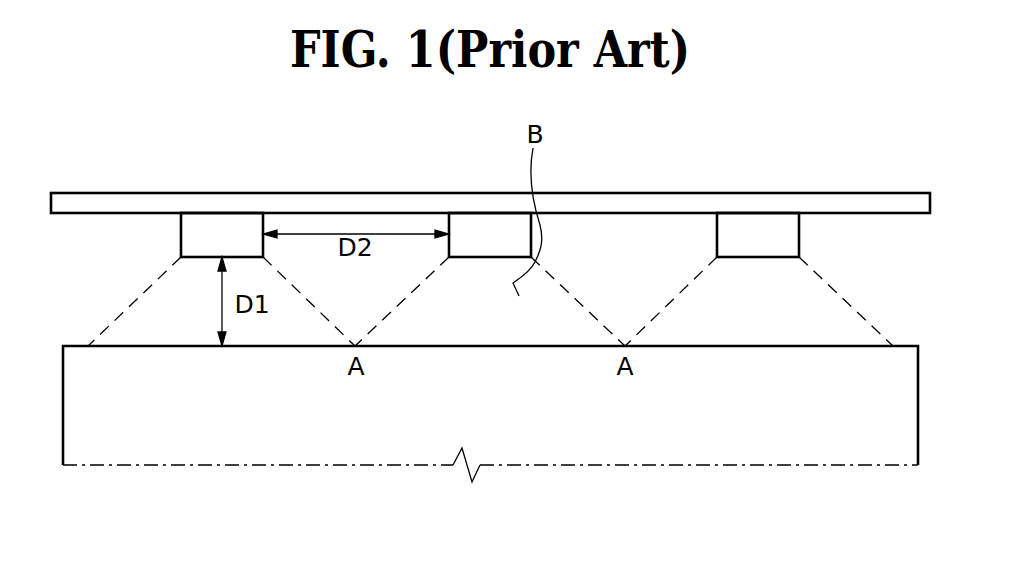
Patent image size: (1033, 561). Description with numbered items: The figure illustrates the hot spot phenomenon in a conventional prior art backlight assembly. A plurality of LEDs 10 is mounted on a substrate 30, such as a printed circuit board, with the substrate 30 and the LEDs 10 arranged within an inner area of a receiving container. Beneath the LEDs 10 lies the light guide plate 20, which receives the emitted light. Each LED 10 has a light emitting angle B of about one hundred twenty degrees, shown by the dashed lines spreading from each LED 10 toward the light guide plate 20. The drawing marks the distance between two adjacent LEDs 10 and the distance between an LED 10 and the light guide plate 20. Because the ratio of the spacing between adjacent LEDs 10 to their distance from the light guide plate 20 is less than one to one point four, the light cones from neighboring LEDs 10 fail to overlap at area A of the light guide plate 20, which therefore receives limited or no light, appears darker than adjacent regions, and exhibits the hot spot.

The LED 10 is at (799, 233).
The light guide plate 20 is at (572, 430).
The substrate 30 is at (640, 202).